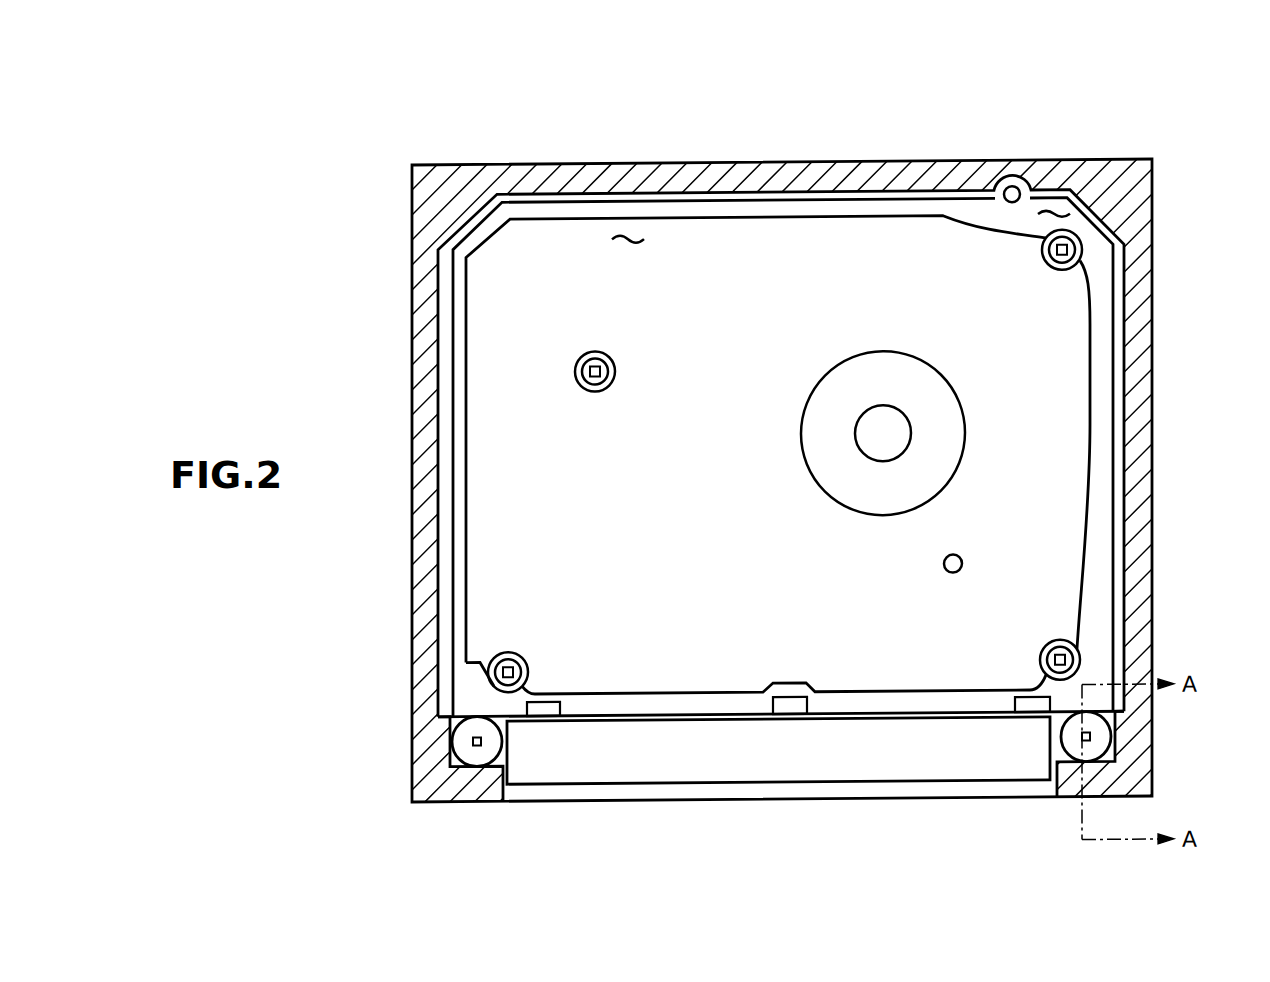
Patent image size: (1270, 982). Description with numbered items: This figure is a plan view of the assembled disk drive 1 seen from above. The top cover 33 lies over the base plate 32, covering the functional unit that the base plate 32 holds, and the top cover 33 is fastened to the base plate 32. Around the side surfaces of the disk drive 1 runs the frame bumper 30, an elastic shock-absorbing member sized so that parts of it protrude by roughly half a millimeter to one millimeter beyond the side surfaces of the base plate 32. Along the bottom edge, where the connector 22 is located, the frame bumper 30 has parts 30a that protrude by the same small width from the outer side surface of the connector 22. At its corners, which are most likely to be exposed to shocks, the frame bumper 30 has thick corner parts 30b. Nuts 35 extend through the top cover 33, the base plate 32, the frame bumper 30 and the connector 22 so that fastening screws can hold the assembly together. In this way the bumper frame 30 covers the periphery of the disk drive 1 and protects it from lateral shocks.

The disk drive 1 is at (800, 156).
The frame bumper 30 is at (502, 164).
The protruding parts of frame bumper 30a is at (501, 800).
The thick corner parts of frame bumper 30b is at (433, 180).
The base plate 32 is at (1062, 215).
The top cover 33 is at (628, 238).
The nuts 35 is at (472, 762).
The connector 22 is at (713, 790).